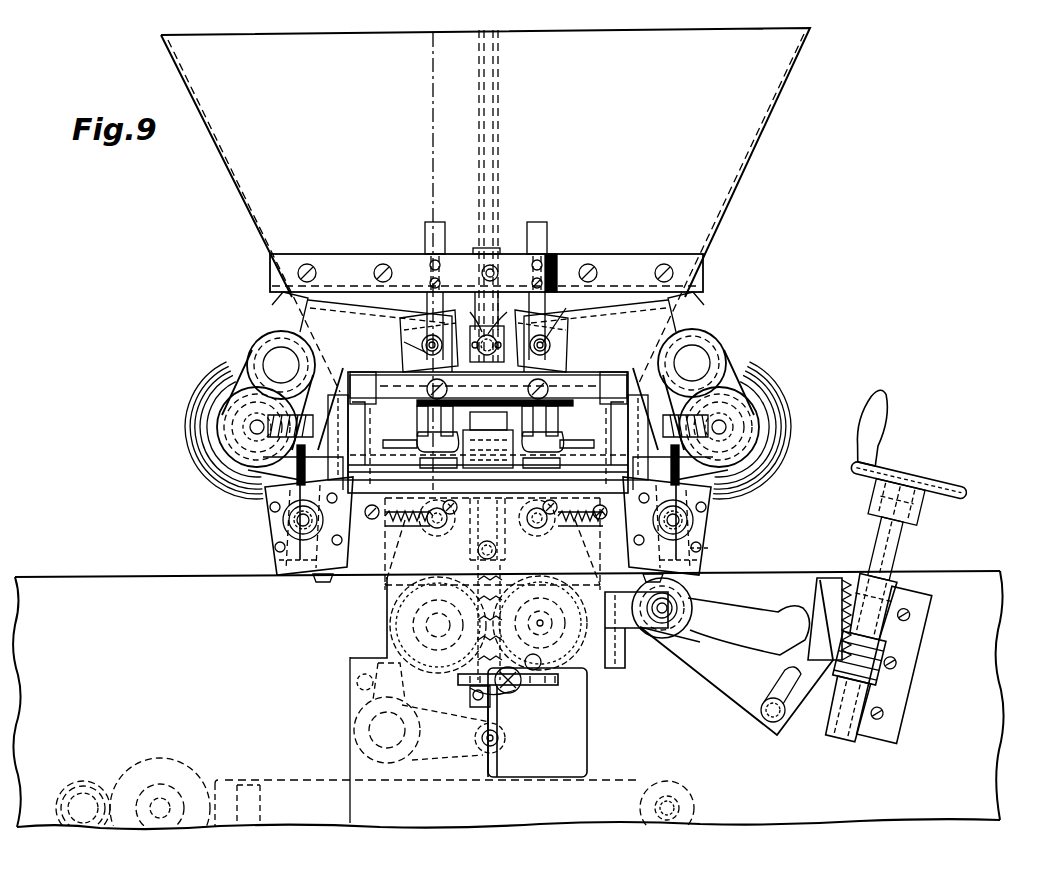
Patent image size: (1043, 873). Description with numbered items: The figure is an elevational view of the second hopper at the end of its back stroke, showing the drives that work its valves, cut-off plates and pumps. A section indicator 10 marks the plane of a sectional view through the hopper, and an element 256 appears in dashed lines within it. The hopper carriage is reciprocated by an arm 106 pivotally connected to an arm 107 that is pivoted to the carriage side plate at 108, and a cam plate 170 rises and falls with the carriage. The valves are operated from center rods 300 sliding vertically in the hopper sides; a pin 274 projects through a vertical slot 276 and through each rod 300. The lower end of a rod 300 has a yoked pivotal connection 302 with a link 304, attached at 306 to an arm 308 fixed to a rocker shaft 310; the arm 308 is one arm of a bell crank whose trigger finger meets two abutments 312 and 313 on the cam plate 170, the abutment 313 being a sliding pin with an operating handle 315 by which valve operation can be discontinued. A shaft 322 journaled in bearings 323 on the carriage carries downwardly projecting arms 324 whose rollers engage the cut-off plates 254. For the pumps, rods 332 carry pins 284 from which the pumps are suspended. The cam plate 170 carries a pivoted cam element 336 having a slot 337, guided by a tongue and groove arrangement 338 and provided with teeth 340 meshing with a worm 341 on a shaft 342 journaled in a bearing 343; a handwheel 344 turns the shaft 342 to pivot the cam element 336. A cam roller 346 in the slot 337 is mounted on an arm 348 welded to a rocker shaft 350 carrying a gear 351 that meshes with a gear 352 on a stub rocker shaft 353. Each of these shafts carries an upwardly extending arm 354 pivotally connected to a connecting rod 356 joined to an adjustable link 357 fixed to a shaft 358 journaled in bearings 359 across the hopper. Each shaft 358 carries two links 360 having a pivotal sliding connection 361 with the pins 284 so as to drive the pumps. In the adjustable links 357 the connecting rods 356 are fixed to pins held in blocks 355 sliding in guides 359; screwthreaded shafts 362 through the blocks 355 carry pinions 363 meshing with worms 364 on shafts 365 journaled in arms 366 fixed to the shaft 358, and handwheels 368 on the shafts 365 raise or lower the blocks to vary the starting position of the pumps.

The section line 10- 10 is at (440, 34).
The arm 106 is at (180, 750).
The arm 107 is at (615, 782).
The pivot 108 is at (678, 806).
The cam plate 170 is at (985, 703).
The cut-off plates 254 is at (445, 470).
The rods 256 is at (496, 72).
The pin 274 is at (510, 322).
The vertical slot 276 is at (465, 322).
The pins 284 is at (482, 322).
The vertically slidable rod 300 is at (490, 248).
The yoked pivotal connection 302 is at (506, 552).
The link 304 is at (508, 712).
The pivot 306 is at (502, 746).
The arm 308 is at (440, 754).
The rocker shaft 310 is at (404, 722).
The abutment 312 is at (357, 682).
The abutment 313 is at (512, 700).
The operating handle 315 is at (468, 692).
The shaft 322 is at (554, 406).
The bearings 323 is at (362, 405).
The downwardly projecting arm 324 is at (424, 384).
The rods 332 is at (432, 236).
The cam element 336 is at (718, 676).
The slot 337 is at (728, 612).
The tongue and groove arrangement 338 is at (787, 708).
The teeth 340 is at (835, 576).
The worm 341 is at (880, 645).
The shaft 342 is at (838, 745).
The bearing 343 is at (893, 600).
The handwheel 344 is at (922, 478).
The cam roller 346 is at (690, 576).
The arm 348 is at (600, 656).
The rocker shaft 350 is at (546, 688).
The gear 351 is at (612, 650).
The gear 352 is at (390, 620).
The stub rocker shaft 353 is at (424, 618).
The arm 354 is at (398, 550).
The blocks 355 is at (697, 538).
The connecting rod 356 is at (405, 528).
The adjustable link 357 is at (712, 512).
The shaft 358 is at (281, 365).
The bearings 359 is at (702, 552).
The links 360 is at (622, 332).
The pivotal sliding connection 361 is at (435, 335).
The shafts 362 is at (742, 476).
The pinions 363 is at (312, 412).
The worms 364 is at (236, 420).
The shafts 365 is at (257, 427).
The arms 366 is at (242, 395).
The handwheel 368 is at (196, 442).